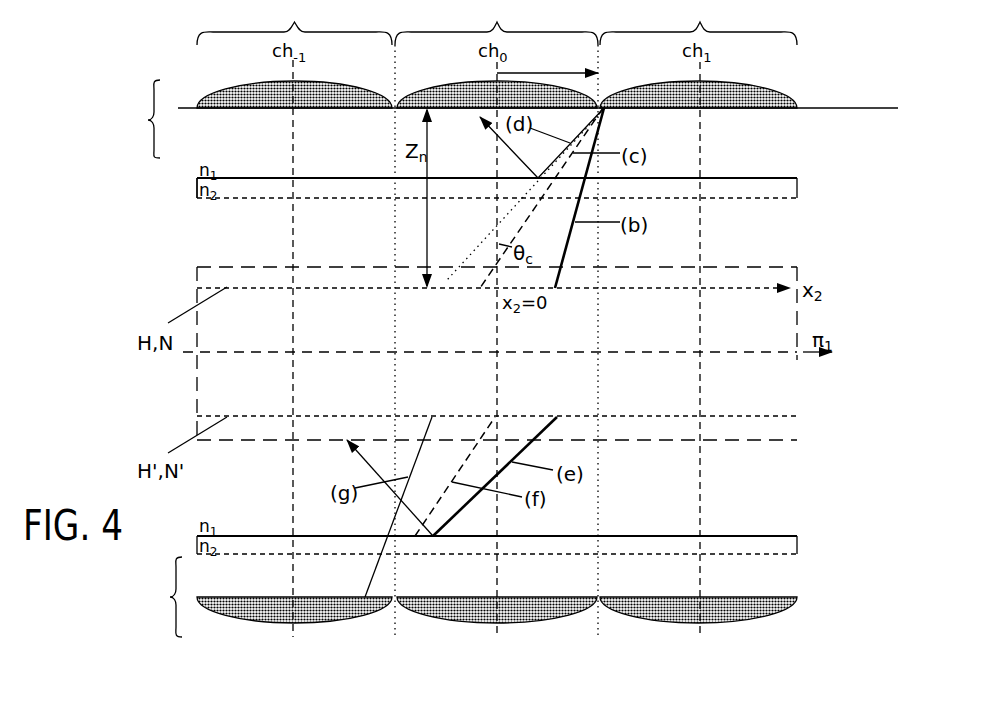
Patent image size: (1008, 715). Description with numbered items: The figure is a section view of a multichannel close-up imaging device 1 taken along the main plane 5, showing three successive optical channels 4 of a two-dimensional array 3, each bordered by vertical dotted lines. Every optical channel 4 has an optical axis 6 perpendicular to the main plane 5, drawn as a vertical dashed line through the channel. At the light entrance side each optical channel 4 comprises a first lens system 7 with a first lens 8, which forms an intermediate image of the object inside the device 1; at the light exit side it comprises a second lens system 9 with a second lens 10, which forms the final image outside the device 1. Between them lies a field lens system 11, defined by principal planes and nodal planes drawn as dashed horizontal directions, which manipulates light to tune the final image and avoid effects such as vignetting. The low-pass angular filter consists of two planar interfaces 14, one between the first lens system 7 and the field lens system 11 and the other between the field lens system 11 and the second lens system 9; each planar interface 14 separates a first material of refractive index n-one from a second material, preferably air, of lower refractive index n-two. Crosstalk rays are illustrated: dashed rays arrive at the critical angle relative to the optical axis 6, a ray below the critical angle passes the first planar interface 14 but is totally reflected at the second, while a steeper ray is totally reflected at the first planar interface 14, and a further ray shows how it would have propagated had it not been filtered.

The device 1 is at (182, 145).
The array 3 is at (182, 187).
The optical channel 4 is at (497, 22).
The main plane 5 is at (848, 108).
The optical axis 6 is at (700, 233).
The first lens system 7 is at (464, 106).
The first lens 8 is at (240, 95).
The second lens system 9 is at (475, 618).
The second lens 10 is at (258, 613).
The field lens system 11 is at (233, 385).
The planar interface 14 is at (775, 177).